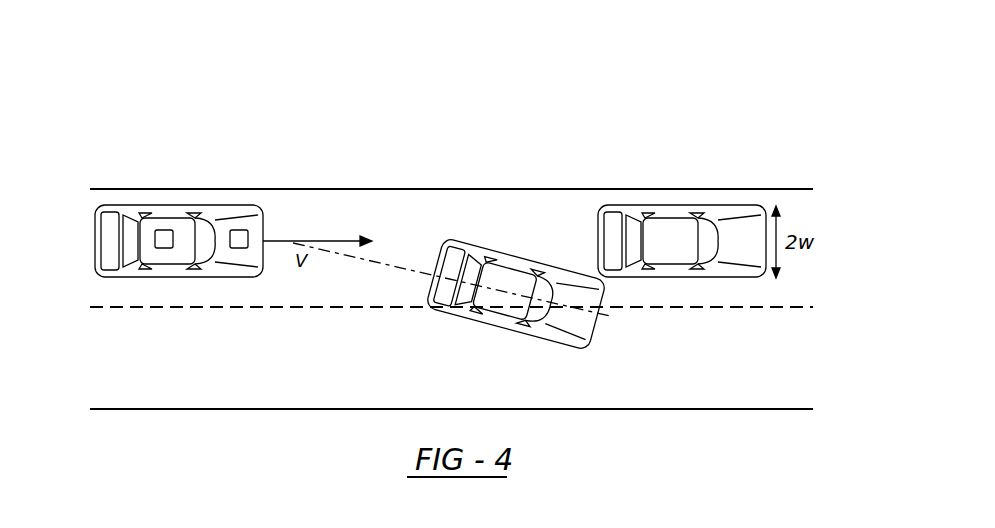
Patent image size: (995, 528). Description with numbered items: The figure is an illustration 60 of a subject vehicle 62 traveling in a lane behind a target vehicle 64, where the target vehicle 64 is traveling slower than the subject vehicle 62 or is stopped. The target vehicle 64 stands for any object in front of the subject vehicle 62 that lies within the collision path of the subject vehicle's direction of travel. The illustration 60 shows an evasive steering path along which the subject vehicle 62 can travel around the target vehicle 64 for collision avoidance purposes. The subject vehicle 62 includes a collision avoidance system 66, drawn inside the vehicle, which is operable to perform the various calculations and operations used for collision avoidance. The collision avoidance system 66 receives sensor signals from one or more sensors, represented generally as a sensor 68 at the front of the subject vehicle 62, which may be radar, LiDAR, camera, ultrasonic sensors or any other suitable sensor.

The illustration 60 is at (608, 80).
The subject vehicle 62 is at (224, 240).
The target vehicle 64 is at (668, 207).
The collision avoidance system 66 is at (170, 248).
The sensor 68 is at (249, 239).